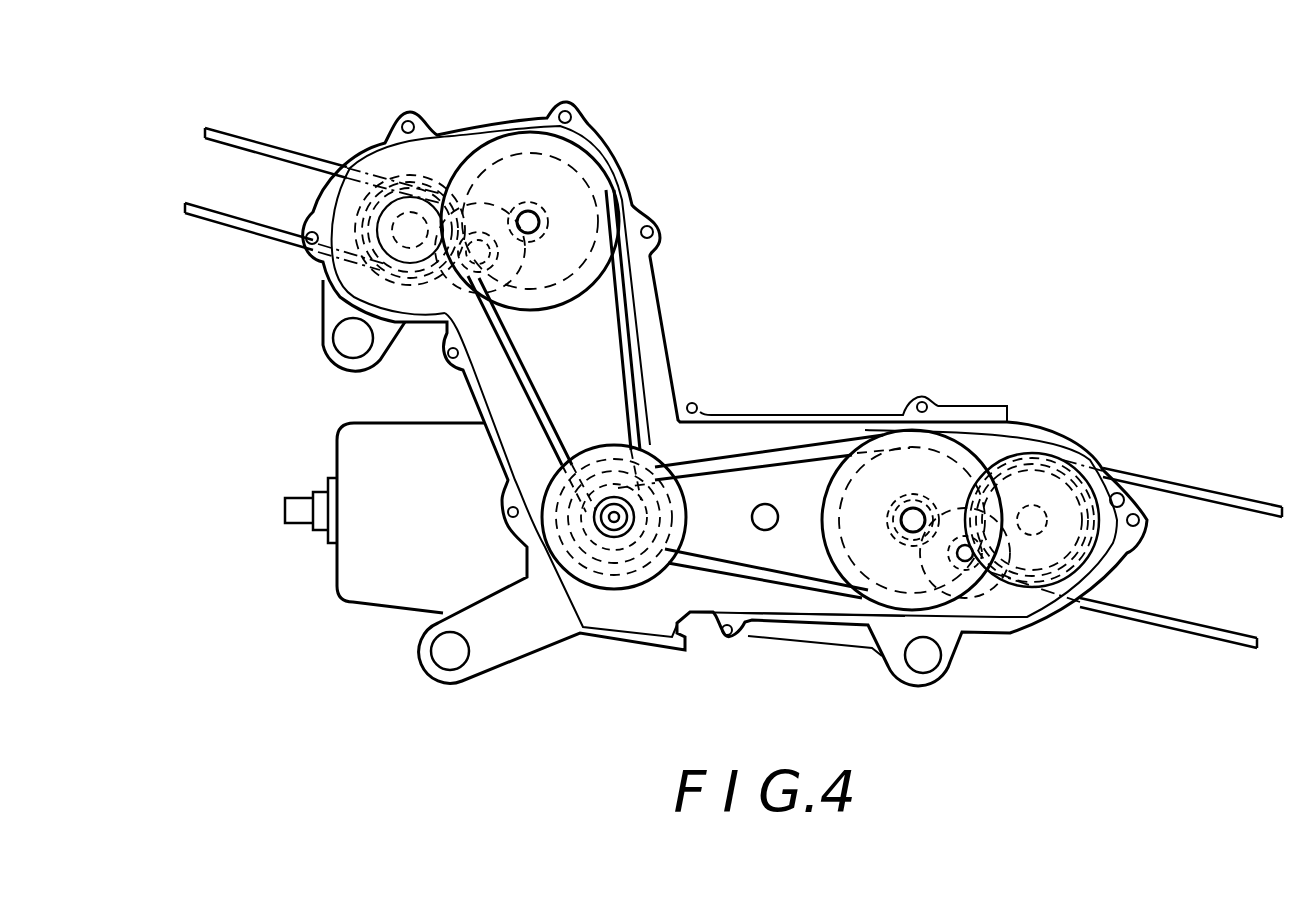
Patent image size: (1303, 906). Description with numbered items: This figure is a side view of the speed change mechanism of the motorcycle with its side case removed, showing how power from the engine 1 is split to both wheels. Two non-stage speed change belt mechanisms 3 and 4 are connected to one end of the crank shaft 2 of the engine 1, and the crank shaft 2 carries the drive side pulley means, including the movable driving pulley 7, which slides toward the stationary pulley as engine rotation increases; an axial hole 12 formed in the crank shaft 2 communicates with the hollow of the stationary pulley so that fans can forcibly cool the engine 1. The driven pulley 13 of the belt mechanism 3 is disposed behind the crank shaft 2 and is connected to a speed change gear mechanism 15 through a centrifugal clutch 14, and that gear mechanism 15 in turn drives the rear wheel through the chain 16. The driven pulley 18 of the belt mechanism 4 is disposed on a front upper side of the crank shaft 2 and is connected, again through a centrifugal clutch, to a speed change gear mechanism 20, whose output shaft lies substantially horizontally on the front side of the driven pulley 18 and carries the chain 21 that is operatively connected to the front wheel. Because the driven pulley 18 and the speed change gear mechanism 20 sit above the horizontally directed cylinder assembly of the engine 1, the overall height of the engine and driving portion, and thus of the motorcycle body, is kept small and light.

The engine 1 is at (397, 577).
The crank shaft 2 is at (605, 525).
The non-stage speed change belt mechanism 3 is at (802, 452).
The non-stage speed change belt mechanism 4 is at (622, 322).
The movable driving pulley 7 is at (683, 497).
The axial hole 12 is at (618, 530).
The driven pulley 13 is at (953, 440).
The centrifugal clutch 14 is at (878, 562).
The speed change gear mechanism 15 is at (975, 560).
The chain 16 is at (1217, 497).
The driven pulley 18 is at (560, 180).
The speed change gear mechanism 20 is at (478, 230).
The chain 21 is at (245, 140).